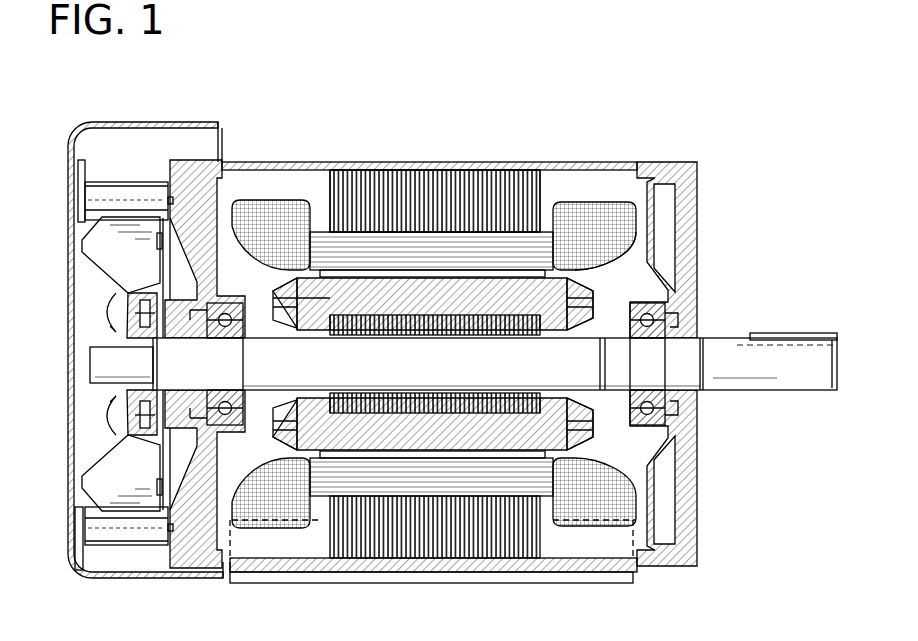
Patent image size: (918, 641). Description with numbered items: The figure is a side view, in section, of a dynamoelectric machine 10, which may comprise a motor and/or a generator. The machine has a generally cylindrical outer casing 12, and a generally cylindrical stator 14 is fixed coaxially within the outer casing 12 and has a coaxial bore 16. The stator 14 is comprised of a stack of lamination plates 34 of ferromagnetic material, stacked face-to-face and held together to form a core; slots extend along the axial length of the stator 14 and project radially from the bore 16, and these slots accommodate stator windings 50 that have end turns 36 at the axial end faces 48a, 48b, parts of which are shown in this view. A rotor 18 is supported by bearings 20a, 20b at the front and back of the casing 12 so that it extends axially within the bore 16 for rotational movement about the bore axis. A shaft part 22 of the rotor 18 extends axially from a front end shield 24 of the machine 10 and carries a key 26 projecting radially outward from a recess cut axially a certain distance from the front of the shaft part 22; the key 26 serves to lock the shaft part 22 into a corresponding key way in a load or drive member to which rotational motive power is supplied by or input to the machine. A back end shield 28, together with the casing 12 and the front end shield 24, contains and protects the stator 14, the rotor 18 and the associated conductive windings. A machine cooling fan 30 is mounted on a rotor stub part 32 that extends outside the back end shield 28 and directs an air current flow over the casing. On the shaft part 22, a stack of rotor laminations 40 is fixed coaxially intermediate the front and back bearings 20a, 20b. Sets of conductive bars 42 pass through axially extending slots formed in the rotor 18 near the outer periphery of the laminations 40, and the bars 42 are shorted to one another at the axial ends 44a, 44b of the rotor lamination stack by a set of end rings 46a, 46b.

The dynamoelectric machine 10 is at (364, 110).
The outer casing 12 is at (461, 162).
The stator 14 is at (439, 338).
The coaxial bore 16 is at (435, 201).
The rotor 18 is at (438, 365).
The front bearing 20a is at (648, 340).
The back bearing 20b is at (215, 342).
The shaft part 22 is at (716, 338).
The front end shield 24 is at (698, 195).
The key 26 is at (780, 333).
The back end shield 28 is at (170, 160).
The machine cooling fan 30 is at (80, 256).
The rotor stub part 32 is at (100, 371).
The lamination plates 34 is at (334, 168).
The end turns 36 is at (607, 248).
The rotor laminations 40 is at (409, 334).
The conductive bars 42 is at (362, 303).
The front axial end of rotor lamination stack 44a is at (537, 331).
The back axial end of rotor lamination stack 44b is at (322, 335).
The front end ring 46a is at (563, 313).
The back end ring 46b is at (310, 293).
The front axial end face 48a is at (540, 198).
The back axial end face 48b is at (327, 193).
The stator windings 50 is at (435, 364).